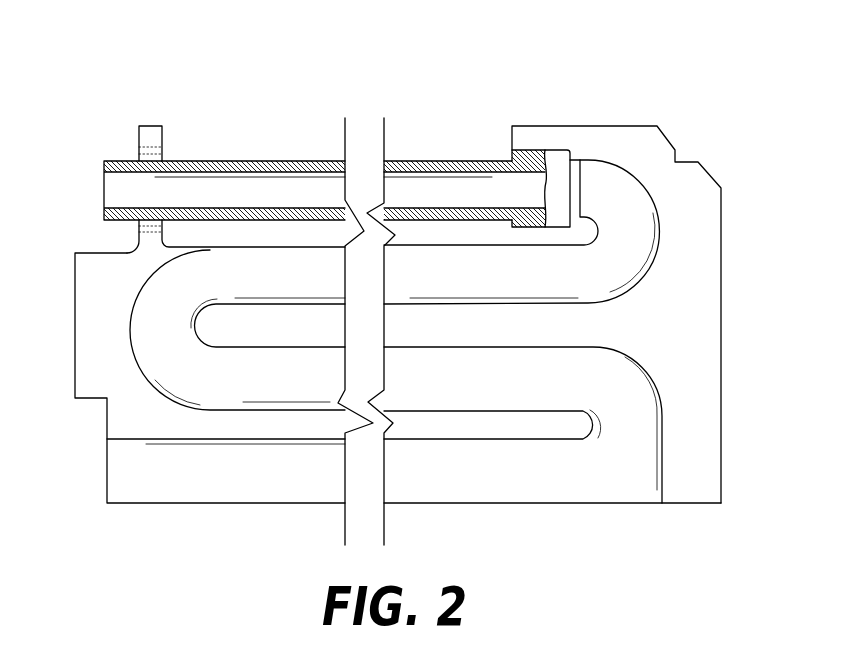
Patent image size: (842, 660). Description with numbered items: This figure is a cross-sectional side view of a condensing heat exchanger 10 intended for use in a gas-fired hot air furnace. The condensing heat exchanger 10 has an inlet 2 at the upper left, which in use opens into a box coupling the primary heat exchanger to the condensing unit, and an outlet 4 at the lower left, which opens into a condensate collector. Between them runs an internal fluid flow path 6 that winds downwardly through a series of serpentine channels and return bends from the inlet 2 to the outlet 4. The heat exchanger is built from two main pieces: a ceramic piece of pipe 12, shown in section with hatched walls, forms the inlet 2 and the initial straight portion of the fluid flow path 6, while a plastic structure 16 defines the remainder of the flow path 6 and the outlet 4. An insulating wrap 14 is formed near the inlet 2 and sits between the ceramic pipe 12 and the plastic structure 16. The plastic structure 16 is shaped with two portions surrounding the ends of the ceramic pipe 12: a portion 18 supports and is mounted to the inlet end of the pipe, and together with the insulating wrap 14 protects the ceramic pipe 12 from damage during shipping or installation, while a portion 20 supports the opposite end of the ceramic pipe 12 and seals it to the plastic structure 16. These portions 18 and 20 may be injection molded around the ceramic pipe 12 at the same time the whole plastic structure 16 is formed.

The condensing heat exchanger 10 is at (165, 56).
The condensing heat exchanger inlet 2 is at (118, 198).
The condensing heat exchanger outlet 4 is at (123, 472).
The internal fluid flow path 6 is at (283, 190).
The ceramic pipe 12 is at (436, 160).
The insulating wrap 14 is at (162, 153).
The plastic structure 16 is at (695, 330).
The portion of the plastic structure 18 is at (143, 139).
The portion of the plastic structure 20 is at (557, 150).